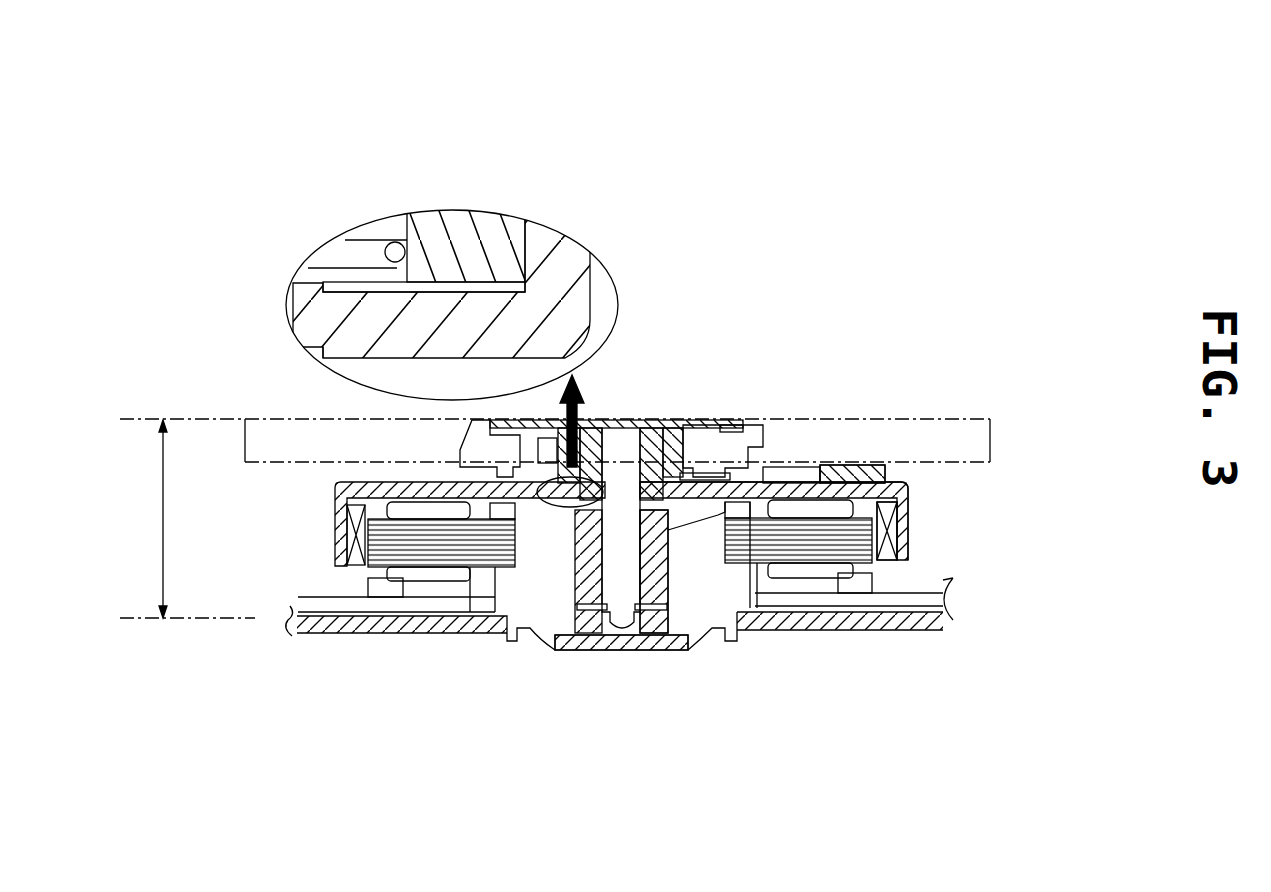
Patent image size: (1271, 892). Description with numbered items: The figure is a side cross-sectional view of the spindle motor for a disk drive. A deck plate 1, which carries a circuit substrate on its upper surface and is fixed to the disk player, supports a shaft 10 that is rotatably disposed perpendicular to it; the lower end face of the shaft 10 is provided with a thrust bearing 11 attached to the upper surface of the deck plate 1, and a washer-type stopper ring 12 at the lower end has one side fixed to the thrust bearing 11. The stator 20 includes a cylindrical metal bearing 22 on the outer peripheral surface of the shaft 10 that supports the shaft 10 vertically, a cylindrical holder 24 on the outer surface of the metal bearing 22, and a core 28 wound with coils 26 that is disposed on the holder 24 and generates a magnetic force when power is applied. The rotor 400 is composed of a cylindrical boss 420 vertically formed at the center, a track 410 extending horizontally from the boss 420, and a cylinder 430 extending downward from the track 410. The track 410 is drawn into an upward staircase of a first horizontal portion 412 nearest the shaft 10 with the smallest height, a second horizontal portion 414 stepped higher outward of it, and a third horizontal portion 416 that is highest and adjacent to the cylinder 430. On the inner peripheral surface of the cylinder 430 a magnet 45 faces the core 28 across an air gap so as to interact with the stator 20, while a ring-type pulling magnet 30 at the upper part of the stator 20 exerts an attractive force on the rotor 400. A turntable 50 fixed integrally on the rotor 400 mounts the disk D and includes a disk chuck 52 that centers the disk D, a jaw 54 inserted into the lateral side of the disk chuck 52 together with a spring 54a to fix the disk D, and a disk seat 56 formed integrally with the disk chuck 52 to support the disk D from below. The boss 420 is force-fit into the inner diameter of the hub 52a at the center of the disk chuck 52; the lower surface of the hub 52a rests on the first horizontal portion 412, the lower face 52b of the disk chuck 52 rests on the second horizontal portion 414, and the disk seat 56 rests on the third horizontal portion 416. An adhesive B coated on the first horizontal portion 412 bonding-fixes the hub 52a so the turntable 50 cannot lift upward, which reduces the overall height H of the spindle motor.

The deck plate 1 is at (903, 630).
The shaft 10 is at (613, 542).
The thrust bearing 11 is at (650, 650).
The washer-type stopper ring 12 is at (585, 650).
The stator 20 is at (481, 588).
The metal bearing 22 is at (670, 580).
The holder 24 is at (705, 598).
The coils 26 is at (787, 578).
The core 28 is at (810, 540).
The pulling magnet 30 is at (495, 512).
The magnet 45 is at (907, 525).
The turntable 50 is at (866, 440).
The disk chuck 52 is at (688, 394).
The hub 52a is at (665, 418).
The lower face 52b is at (843, 418).
The jaw 54 is at (778, 418).
The spring 54a is at (730, 418).
The disk seat 56 is at (893, 418).
The rotor 400 is at (325, 505).
The track 410 is at (860, 418).
The first horizontal portion 412 is at (352, 282).
The second horizontal portion 414 is at (817, 418).
The third horizontal portion 416 is at (950, 418).
The boss 420 is at (648, 418).
The cylinder 430 is at (907, 545).
The adhesive B is at (443, 213).
The disk D is at (257, 443).
The overall height H is at (145, 519).